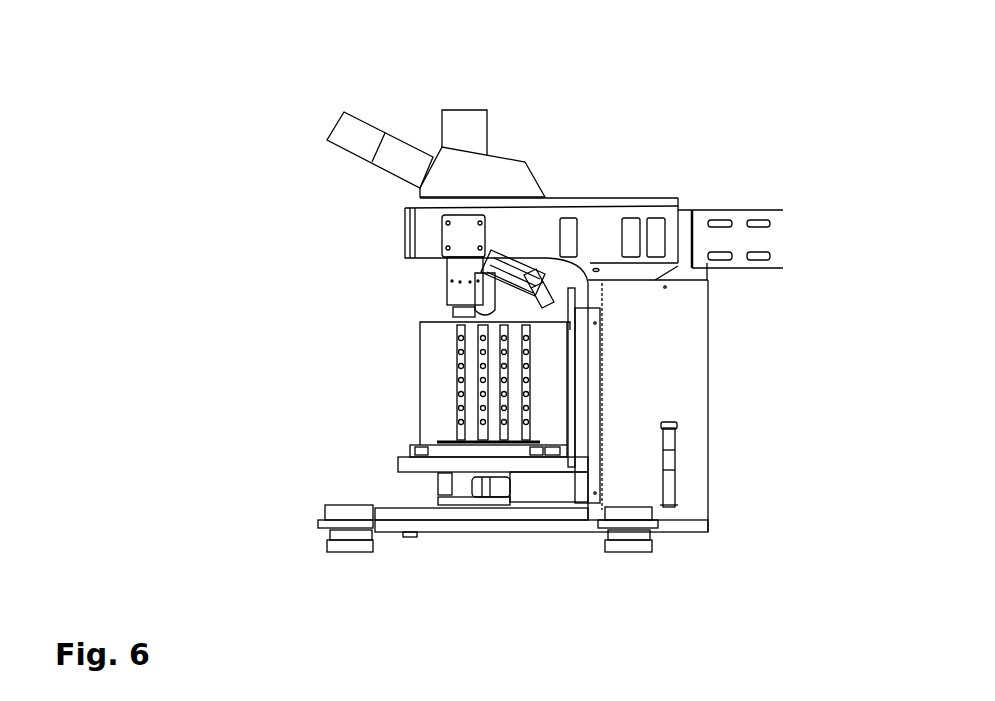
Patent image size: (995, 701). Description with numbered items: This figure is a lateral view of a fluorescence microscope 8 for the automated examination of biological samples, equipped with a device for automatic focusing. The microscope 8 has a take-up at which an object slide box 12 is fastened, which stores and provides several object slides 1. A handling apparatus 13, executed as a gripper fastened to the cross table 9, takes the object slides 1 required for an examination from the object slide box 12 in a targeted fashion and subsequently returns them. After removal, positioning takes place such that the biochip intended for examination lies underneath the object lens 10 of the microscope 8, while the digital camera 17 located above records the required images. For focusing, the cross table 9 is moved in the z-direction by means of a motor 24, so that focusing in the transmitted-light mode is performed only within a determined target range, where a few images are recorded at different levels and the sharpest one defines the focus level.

The fluorescence microscope 8 is at (757, 140).
The digital camera 17 is at (587, 183).
The object lens 10 is at (447, 293).
The object slide box 12 is at (417, 380).
The object slide 1 is at (505, 432).
The handling apparatus 13 is at (540, 440).
The cross table 9 is at (423, 462).
The motor 24 is at (570, 488).